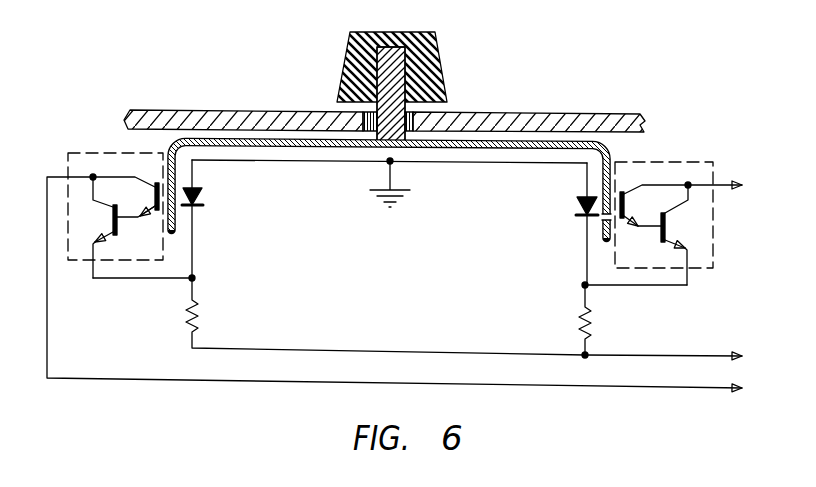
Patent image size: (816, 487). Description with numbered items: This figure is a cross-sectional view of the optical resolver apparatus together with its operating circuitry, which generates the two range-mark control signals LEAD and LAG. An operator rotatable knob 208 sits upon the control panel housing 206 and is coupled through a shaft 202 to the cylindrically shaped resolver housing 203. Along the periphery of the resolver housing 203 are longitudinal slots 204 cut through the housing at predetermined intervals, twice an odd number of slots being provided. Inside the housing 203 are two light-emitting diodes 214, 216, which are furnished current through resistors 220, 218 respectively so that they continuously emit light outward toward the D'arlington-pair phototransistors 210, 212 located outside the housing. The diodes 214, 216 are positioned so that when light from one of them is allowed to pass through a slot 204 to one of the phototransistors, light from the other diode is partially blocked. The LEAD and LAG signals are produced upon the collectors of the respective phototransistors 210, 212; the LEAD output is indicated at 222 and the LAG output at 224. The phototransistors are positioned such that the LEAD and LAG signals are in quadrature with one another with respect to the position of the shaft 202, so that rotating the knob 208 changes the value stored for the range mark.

The shaft 202 is at (388, 58).
The resolver housing 203 is at (605, 153).
The longitudinal slots 204 is at (604, 219).
The control panel housing 206 is at (487, 120).
The operator rotatable knob 208 is at (435, 42).
The D'arlington-pair phototransistor 210 is at (707, 227).
The D'arlington-pair phototransistor 212 is at (68, 165).
The light-emitting diode 214 is at (578, 203).
The light-emitting diode 216 is at (200, 198).
The resistor 218 is at (200, 304).
The resistor 220 is at (593, 312).
The lead output line 222 is at (728, 184).
The lag output line 224 is at (627, 388).